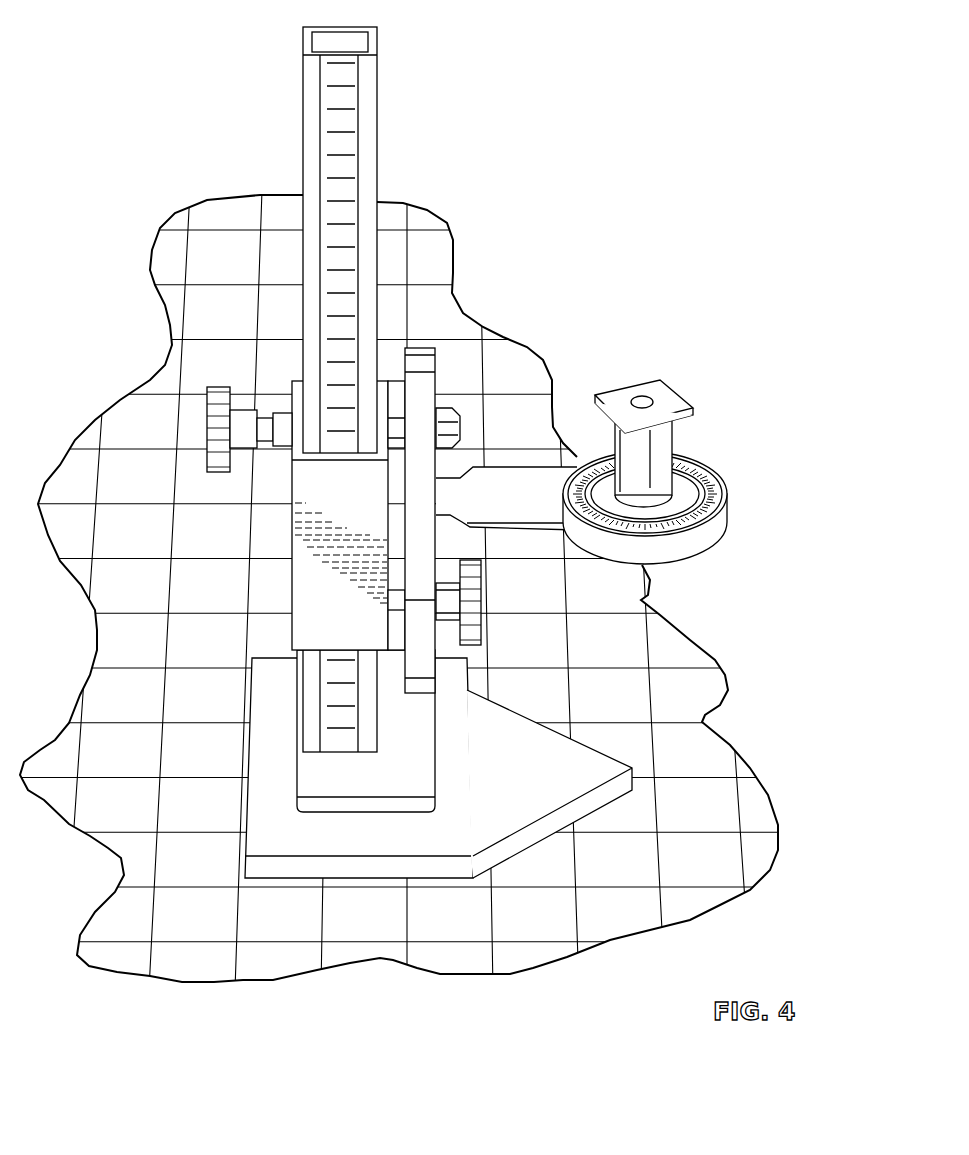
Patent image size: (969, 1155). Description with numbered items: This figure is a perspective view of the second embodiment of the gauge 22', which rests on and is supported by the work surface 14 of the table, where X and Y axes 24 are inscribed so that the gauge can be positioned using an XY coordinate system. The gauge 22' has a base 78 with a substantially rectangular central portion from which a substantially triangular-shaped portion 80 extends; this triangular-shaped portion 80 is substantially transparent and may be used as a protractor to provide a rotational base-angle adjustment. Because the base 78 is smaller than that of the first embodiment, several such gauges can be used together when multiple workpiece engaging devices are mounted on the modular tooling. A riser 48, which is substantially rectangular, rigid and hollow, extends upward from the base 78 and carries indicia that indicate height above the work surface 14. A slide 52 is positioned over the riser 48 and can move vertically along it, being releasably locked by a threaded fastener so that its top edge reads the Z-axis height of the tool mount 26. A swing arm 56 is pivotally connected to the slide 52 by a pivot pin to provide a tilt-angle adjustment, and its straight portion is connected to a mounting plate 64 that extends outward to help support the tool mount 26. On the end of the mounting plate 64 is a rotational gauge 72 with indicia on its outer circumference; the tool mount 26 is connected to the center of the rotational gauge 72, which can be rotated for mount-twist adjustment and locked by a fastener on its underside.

The work surface 14 is at (205, 760).
The gauge 22' is at (257, 275).
The X and Y axes 24 is at (685, 667).
The tool mount 26 is at (667, 395).
The riser 48 is at (310, 683).
The slide 52 is at (307, 587).
The swing arm 56 is at (430, 682).
The mounting plate 64 is at (500, 480).
The rotational gauge 72 is at (683, 482).
The base 78 is at (458, 815).
The triangular-shaped portion 80 is at (583, 762).